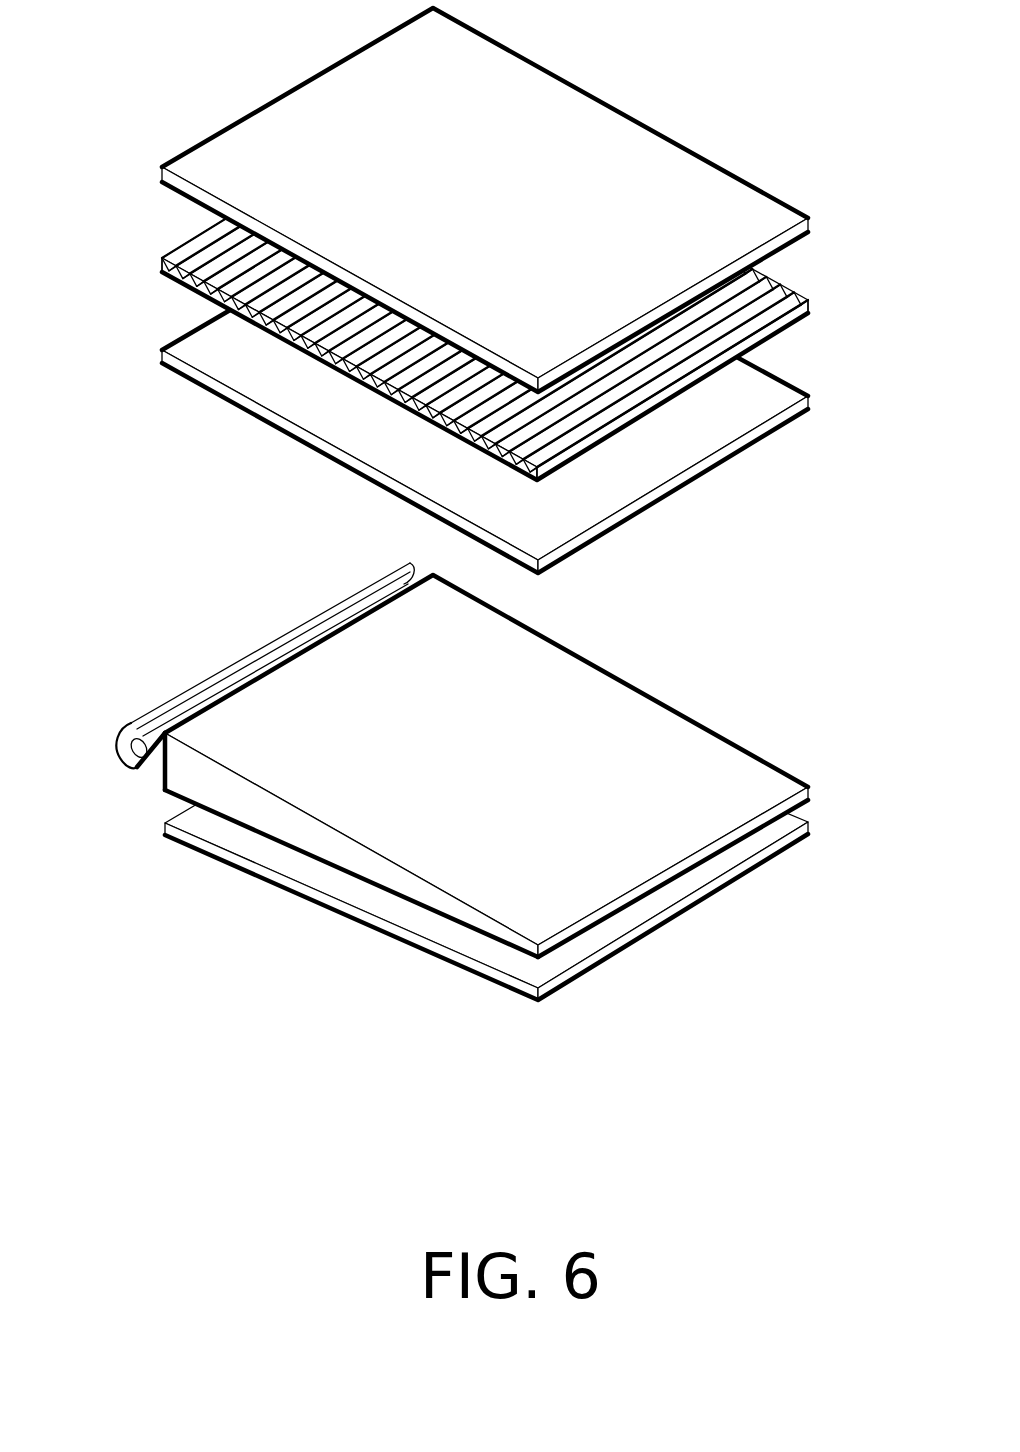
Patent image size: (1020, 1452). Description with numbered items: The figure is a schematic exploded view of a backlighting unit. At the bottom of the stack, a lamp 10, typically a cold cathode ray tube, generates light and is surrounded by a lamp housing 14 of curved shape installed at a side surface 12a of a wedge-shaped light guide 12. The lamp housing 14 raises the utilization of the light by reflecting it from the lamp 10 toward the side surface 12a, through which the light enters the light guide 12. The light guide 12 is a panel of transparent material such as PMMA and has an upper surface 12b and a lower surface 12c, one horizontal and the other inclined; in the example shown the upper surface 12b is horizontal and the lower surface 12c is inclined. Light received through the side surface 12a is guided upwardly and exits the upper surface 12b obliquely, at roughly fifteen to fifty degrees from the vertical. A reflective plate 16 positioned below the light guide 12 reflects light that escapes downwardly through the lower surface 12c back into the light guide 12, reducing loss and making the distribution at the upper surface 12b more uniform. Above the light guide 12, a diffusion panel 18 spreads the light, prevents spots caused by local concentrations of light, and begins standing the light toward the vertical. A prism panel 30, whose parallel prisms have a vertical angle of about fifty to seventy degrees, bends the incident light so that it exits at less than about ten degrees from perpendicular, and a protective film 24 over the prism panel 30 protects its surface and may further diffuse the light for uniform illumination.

The lamp 10 is at (128, 765).
The light guide 12 is at (438, 779).
The side surface 12a is at (165, 790).
The upper surface 12b is at (265, 717).
The lower surface 12c is at (262, 838).
The lamp housing 14 is at (130, 722).
The reflective plate 16 is at (370, 913).
The diffusion panel 18 is at (712, 441).
The protective film 24 is at (612, 133).
The prism panel 30 is at (810, 300).